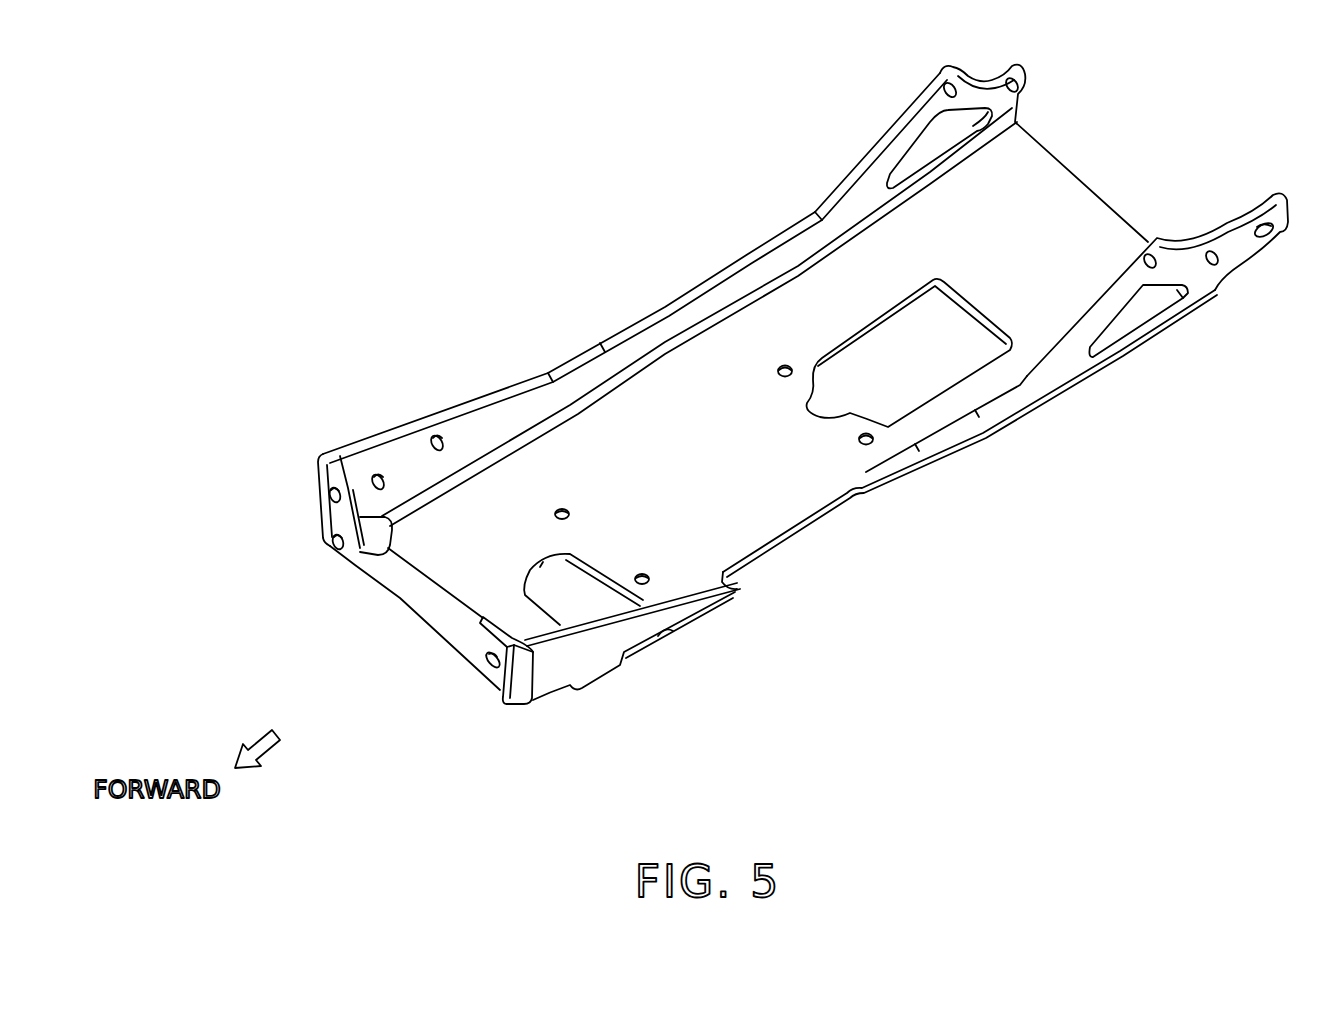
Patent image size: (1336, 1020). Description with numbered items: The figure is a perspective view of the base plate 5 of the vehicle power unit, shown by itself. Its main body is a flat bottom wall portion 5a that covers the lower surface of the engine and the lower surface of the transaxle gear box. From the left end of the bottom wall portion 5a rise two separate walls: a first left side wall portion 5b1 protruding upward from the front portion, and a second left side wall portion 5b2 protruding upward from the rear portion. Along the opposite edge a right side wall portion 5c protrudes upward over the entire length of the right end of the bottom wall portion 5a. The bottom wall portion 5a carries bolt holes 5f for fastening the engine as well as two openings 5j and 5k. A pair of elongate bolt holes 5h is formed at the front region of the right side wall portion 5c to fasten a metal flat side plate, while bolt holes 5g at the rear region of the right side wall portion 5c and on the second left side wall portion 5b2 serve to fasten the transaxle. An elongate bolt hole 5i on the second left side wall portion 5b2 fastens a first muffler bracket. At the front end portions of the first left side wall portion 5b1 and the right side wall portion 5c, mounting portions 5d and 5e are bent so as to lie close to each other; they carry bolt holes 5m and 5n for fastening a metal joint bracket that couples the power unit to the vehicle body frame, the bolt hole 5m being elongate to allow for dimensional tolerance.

The base plate 5 is at (617, 290).
The bottom wall portion 5a is at (630, 433).
The first left side wall portion 5b1 is at (597, 670).
The second left side wall portion 5b2 is at (987, 427).
The right side wall portion 5c is at (765, 243).
The mounting portion 5d is at (495, 678).
The mounting portion 5e is at (325, 518).
The bolt holes 5f is at (569, 514).
The bolt holes 5g is at (953, 97).
The elongate bolt holes 5h is at (378, 474).
The elongate bolt hole 5i is at (1265, 235).
The opening 5j is at (600, 600).
The opening 5k is at (903, 395).
The bolt hole 5m is at (484, 653).
The bolt hole 5n is at (360, 550).